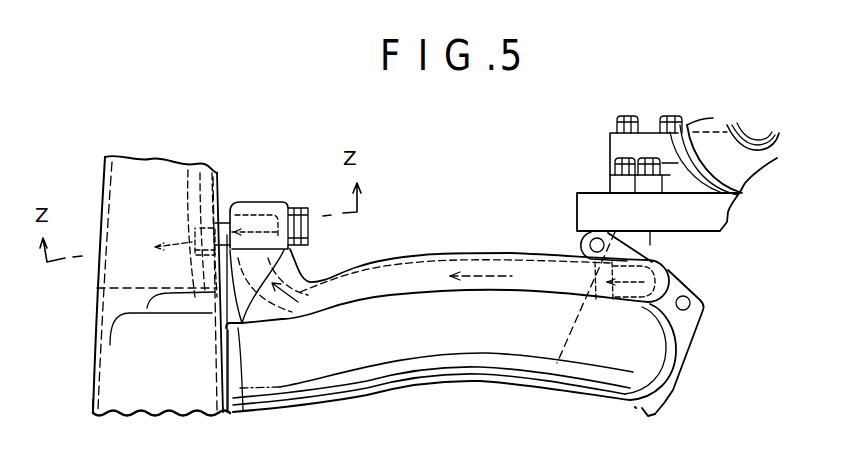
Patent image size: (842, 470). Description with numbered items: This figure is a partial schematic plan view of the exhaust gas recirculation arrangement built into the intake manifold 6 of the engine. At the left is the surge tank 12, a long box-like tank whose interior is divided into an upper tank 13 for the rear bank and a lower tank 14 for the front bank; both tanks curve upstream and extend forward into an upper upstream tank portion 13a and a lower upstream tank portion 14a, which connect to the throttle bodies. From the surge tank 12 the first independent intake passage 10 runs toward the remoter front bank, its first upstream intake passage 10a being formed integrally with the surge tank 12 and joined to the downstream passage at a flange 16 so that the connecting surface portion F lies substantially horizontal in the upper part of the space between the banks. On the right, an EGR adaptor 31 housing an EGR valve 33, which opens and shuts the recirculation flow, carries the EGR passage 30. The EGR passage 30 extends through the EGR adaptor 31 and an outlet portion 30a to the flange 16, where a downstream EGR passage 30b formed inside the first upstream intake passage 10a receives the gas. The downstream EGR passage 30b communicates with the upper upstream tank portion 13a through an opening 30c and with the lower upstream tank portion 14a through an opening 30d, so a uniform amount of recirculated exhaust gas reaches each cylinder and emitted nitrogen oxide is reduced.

The intake manifold 6 is at (702, 368).
The first independent intake passage 10 is at (485, 358).
The first upstream intake passage 10a is at (358, 380).
The surge tank 12 is at (73, 378).
The upper tank 13 is at (160, 400).
The upper upstream tank portion 13a is at (111, 183).
The lower tank 14 is at (107, 298).
The lower upstream tank portion 14a is at (188, 168).
The flange 16 is at (683, 321).
The EGR passage 30 is at (417, 246).
The outlet portion 30a is at (650, 245).
The downstream EGR passage 30b is at (525, 269).
The opening 30c is at (192, 236).
The opening 30d is at (192, 243).
The EGR adaptor 31 is at (623, 180).
The EGR valve 33 is at (724, 199).
The connecting surface portion F is at (665, 399).